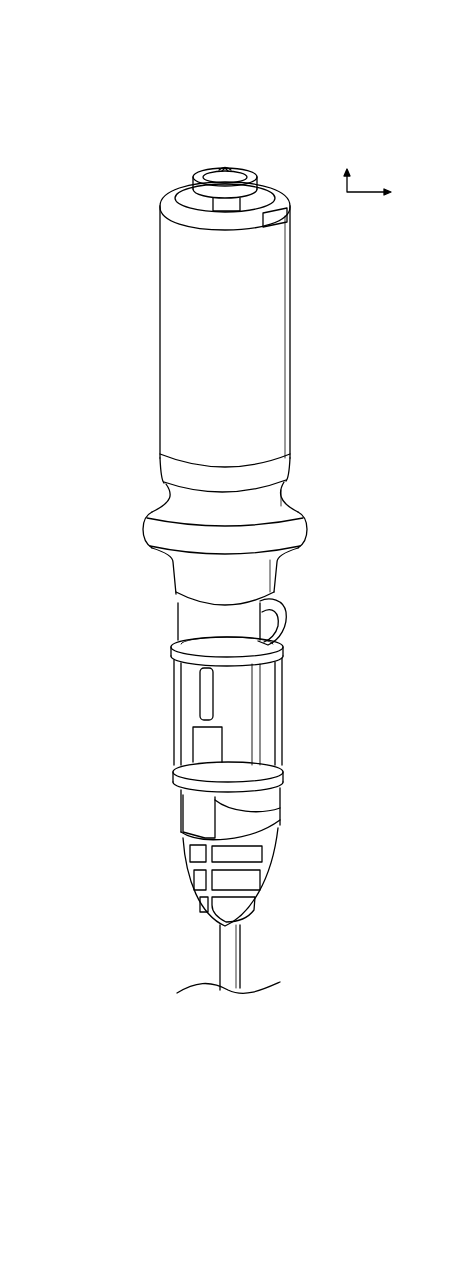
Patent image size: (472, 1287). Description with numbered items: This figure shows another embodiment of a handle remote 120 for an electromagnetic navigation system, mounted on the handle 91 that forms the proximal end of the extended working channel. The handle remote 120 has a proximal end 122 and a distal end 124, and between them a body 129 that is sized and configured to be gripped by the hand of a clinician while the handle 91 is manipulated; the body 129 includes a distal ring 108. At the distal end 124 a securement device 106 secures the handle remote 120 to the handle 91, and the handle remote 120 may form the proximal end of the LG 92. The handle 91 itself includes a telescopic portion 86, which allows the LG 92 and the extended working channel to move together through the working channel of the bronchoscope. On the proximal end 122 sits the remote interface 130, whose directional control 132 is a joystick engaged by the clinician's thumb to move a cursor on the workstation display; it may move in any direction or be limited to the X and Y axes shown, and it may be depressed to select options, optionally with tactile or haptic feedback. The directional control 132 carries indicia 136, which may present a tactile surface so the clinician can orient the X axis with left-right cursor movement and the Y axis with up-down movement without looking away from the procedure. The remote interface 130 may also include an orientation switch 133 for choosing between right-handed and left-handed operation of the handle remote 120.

The handle remote 120 is at (104, 342).
The remote interface 130 is at (300, 132).
The proximal end 122 is at (170, 197).
The directional control 132 is at (248, 172).
The indicia 136 is at (222, 170).
The orientation switch 133 is at (285, 210).
The body 129 is at (192, 395).
The distal ring 108 is at (155, 530).
The distal end 124 is at (185, 578).
The securement device 106 is at (280, 615).
The LG 92 is at (272, 680).
The handle 91 is at (278, 752).
The telescopic portion 86 is at (238, 925).